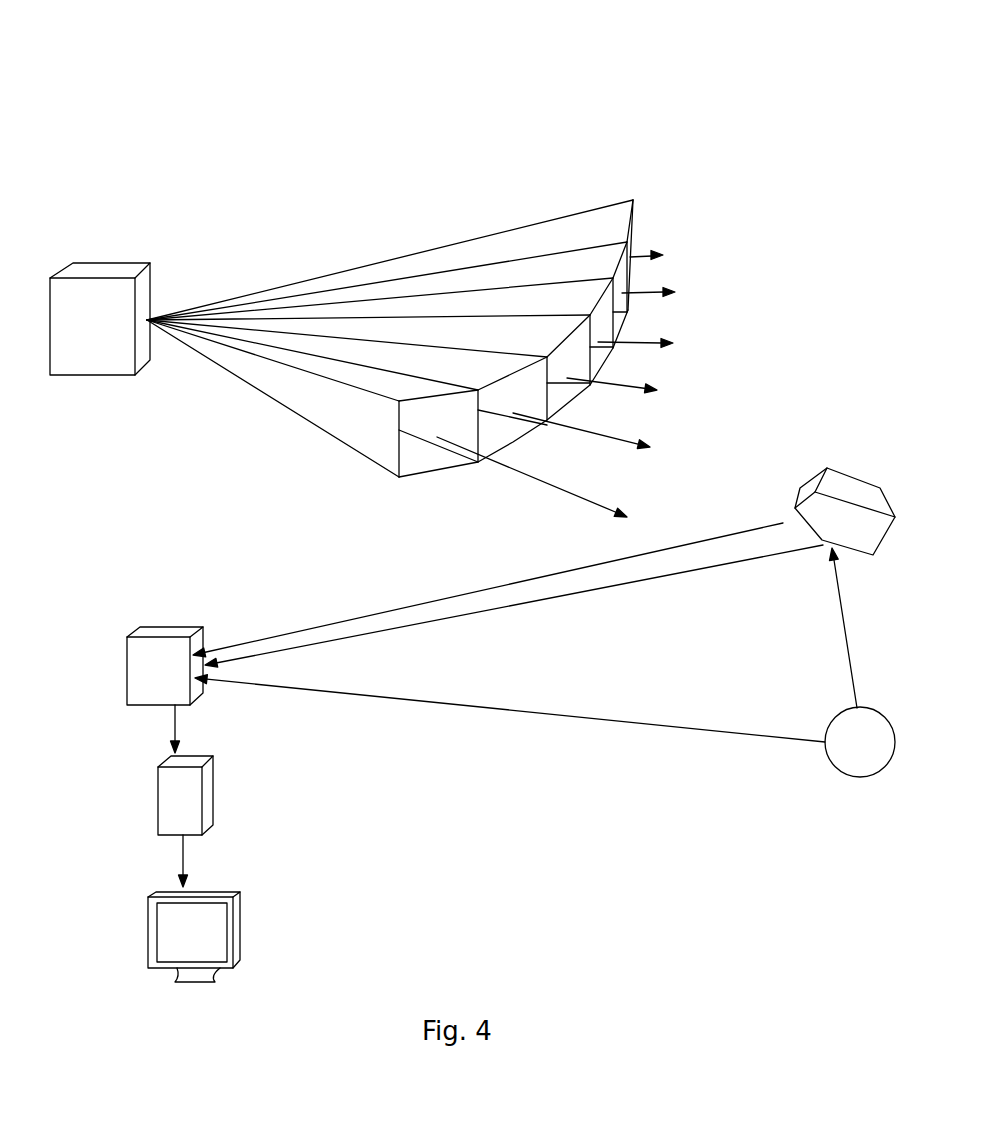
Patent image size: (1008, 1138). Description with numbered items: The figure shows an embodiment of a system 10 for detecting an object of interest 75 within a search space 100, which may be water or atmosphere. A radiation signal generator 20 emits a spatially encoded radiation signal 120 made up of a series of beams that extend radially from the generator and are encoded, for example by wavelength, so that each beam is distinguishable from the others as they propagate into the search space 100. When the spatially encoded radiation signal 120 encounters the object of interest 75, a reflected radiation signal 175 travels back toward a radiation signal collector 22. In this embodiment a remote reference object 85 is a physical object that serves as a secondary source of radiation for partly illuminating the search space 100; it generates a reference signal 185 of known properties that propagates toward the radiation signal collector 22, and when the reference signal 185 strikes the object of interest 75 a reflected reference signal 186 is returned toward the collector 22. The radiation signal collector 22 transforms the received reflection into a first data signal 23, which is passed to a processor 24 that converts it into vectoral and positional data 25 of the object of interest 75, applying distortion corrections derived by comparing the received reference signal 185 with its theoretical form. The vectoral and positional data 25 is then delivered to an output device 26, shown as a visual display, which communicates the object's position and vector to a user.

The system 10 is at (77, 102).
The radiation signal generator 20 is at (90, 270).
The spatially encoded radiation signal 120 is at (640, 200).
The search space 100 is at (781, 162).
The radiation signal collector 22 is at (127, 683).
The first data signal 23 is at (178, 717).
The processor 24 is at (158, 823).
The vectoral and positional data 25 is at (185, 847).
The output device 26 is at (233, 923).
The reflected radiation signal 175 is at (402, 608).
The reflected reference signal 186 is at (437, 623).
The reference signal 185 is at (838, 674).
The object of interest 75 is at (825, 462).
The remote reference object 85 is at (867, 775).